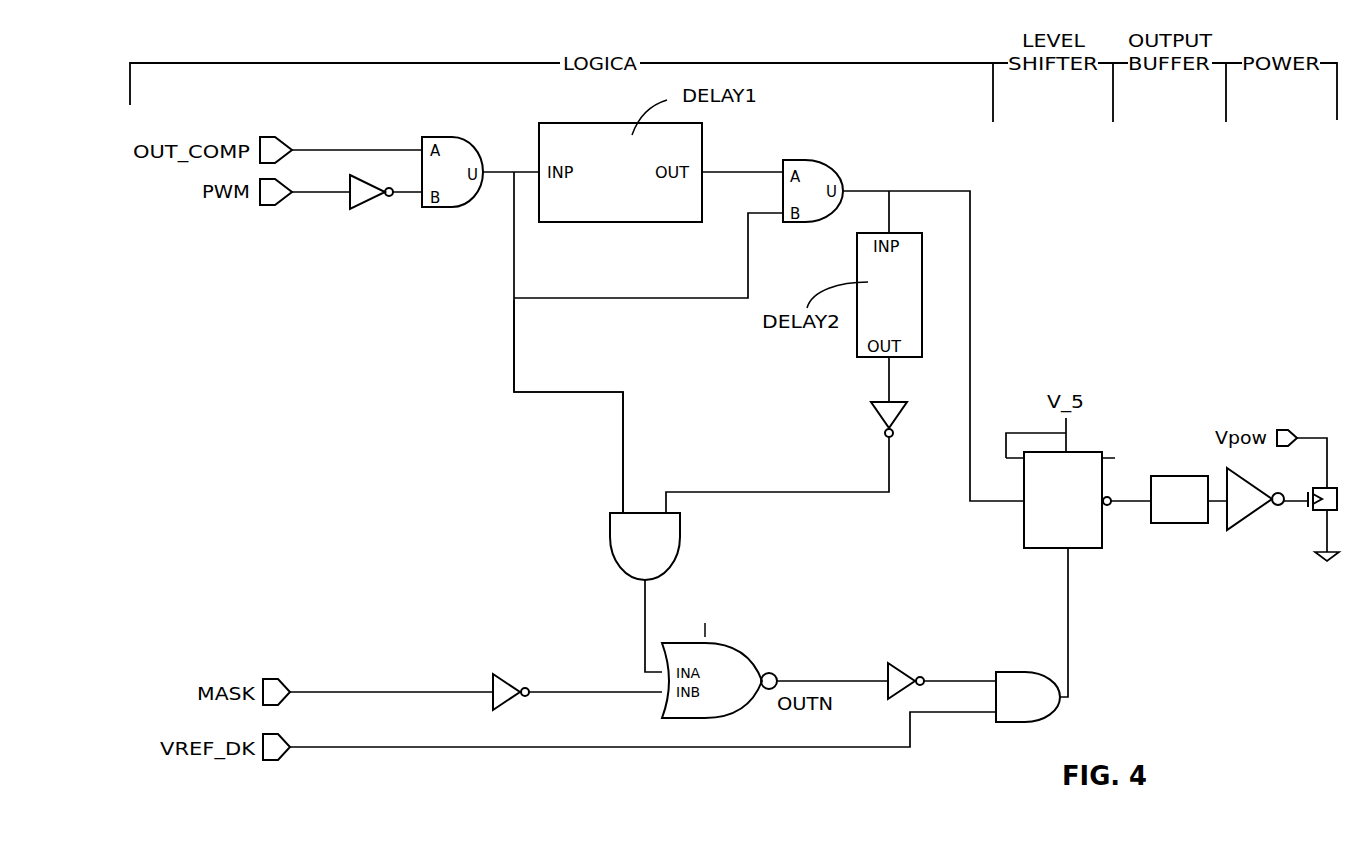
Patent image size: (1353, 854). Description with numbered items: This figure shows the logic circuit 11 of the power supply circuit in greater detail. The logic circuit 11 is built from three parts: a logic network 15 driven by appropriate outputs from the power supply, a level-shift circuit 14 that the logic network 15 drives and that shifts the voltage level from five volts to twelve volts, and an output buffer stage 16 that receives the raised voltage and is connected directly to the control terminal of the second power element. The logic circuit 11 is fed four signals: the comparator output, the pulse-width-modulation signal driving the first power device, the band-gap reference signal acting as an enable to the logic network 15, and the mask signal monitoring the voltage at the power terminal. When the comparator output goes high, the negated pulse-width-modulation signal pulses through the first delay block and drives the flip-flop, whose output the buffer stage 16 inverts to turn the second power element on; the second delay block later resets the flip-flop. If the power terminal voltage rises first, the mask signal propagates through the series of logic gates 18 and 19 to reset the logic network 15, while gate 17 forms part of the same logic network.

The logic circuit 11 is at (1153, 393).
The level-shift circuit 14 is at (1165, 510).
The logic network 15 is at (609, 367).
The output buffer stage 16 is at (1240, 500).
The AND gate 17 is at (615, 537).
The logic gate 18 is at (735, 663).
The logic gate 19 is at (1035, 678).